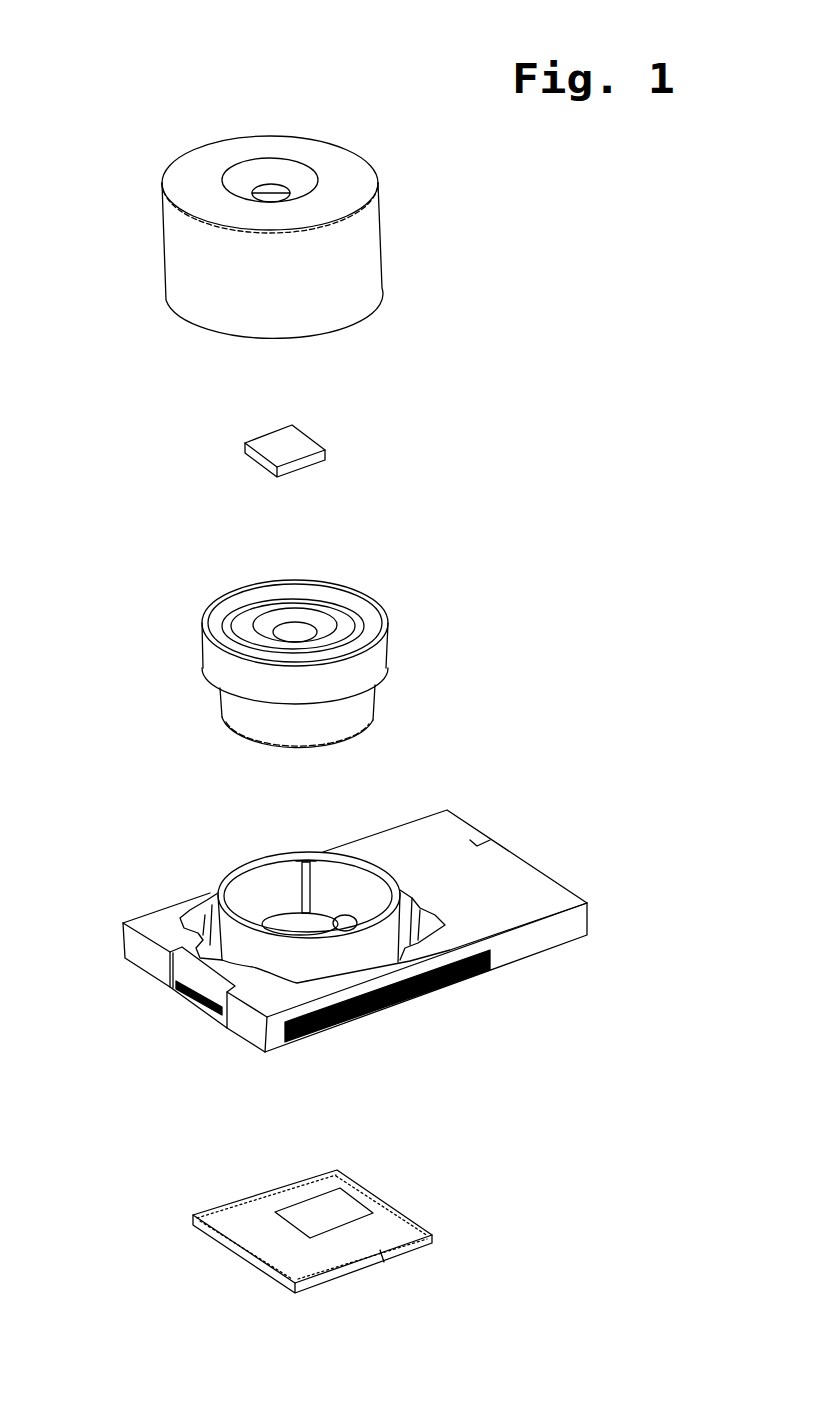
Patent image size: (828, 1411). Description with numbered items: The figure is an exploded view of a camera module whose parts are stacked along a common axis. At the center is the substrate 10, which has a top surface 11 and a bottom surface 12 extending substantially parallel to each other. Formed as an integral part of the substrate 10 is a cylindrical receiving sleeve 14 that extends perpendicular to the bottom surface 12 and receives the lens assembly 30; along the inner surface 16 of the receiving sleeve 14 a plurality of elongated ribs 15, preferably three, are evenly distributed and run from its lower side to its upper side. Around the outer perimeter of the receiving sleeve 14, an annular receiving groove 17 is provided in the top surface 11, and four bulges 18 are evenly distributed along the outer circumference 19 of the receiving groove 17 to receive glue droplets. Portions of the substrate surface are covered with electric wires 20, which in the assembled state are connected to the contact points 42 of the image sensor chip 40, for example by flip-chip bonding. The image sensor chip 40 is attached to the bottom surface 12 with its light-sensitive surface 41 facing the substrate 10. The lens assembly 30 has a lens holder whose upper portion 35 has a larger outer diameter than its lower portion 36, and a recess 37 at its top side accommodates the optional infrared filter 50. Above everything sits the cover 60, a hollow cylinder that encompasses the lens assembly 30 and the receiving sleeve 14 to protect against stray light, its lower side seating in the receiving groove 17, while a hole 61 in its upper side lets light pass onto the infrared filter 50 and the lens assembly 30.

The substrate 10 is at (376, 932).
The top surface 11 is at (537, 908).
The bottom surface 12 is at (153, 977).
The receiving sleeve 14 is at (292, 958).
The ribs 15 is at (250, 903).
The inner surface 16 is at (300, 882).
The receiving groove 17 is at (405, 892).
The bulges 18 is at (420, 900).
The outer circumference 19 is at (435, 932).
The electric wires 20 is at (332, 1030).
The lens assembly 30 is at (285, 624).
The upper portion 35 is at (372, 662).
The lower portion 36 is at (360, 715).
The recess 37 is at (295, 633).
The image sensor chip 40 is at (339, 1238).
The light-sensitive surface 41 is at (340, 1210).
The contact points 42 is at (385, 1255).
The infrared filter 50 is at (298, 448).
The cover 60 is at (360, 260).
The hole 61 is at (268, 188).